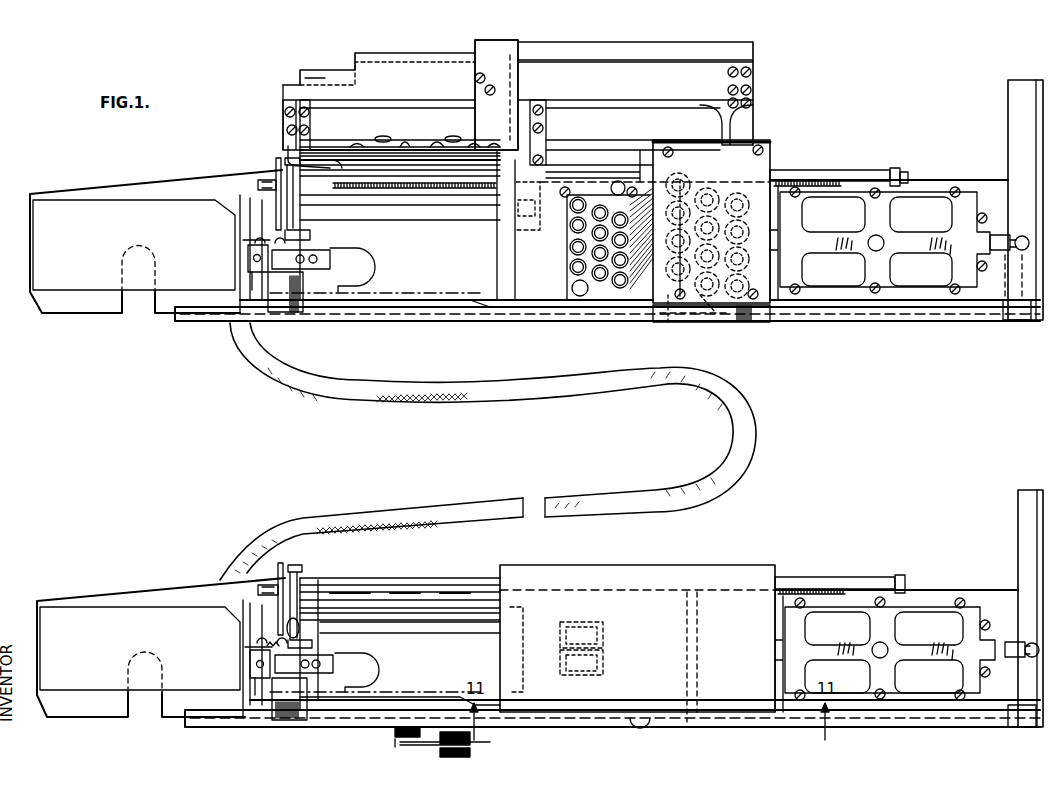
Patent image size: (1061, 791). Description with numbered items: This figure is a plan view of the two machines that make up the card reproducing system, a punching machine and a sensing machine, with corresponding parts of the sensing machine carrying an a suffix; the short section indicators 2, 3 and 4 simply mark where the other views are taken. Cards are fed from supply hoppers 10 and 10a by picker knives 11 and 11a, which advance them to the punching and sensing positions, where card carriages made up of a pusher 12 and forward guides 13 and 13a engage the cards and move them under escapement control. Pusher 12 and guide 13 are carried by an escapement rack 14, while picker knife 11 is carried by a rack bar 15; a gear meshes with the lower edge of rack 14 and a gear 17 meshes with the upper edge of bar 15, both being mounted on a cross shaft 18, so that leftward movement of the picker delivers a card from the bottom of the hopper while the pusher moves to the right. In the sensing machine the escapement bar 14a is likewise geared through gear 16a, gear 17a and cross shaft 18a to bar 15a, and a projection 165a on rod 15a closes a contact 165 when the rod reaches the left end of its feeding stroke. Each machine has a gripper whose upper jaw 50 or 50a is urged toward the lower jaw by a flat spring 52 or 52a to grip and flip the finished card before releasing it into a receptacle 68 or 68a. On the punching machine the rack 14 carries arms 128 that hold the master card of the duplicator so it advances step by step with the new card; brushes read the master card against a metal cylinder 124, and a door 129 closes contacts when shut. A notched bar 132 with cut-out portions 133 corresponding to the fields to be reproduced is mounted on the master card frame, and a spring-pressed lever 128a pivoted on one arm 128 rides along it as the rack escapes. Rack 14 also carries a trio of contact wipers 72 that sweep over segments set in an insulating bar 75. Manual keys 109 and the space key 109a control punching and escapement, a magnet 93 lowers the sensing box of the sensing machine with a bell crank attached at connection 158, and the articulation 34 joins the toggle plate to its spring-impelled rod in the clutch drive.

The section line 2- 2 is at (643, 345).
The section line 3- 3 is at (638, 259).
The section line 4- 4 is at (452, 130).
The supply hopper 10 is at (915, 197).
The supply hopper 10a is at (928, 617).
The picker knife 11 is at (1013, 240).
The picker knife 11a is at (1015, 646).
The pusher 12 is at (529, 231).
The forward guide 13 is at (307, 232).
The forward guide 13a is at (318, 634).
The escapement rack 14 is at (806, 180).
The escapement bar 14a is at (838, 588).
The rack bar 15 is at (861, 315).
The rack bar 15a is at (845, 722).
The gear 16a is at (705, 590).
The gear 17 is at (668, 322).
The gear 17a is at (690, 724).
The cross shaft 18 is at (713, 320).
The cross shaft 18a is at (699, 688).
The articulation 34 is at (276, 168).
The upper jaw 50 is at (322, 262).
The upper jaw 50a is at (325, 676).
The flat spring 52 is at (316, 270).
The flat spring 52a is at (294, 668).
The receptacle 68 is at (125, 210).
The receptacle 68a is at (117, 612).
The contact wipers 72 is at (310, 165).
The insulating bar 75 is at (442, 152).
The magnet 93 is at (580, 624).
The key 109 is at (572, 267).
The space key 109a is at (580, 297).
The metal cylinder 124 is at (500, 58).
The arms 128 is at (290, 118).
The spring-pressed lever 128a is at (291, 205).
The door 129 is at (306, 70).
The notched bar 132 is at (368, 140).
The cut-out portions 133 is at (440, 144).
The connection 158 is at (617, 181).
The contact 165 is at (390, 742).
The projection 165a is at (641, 729).